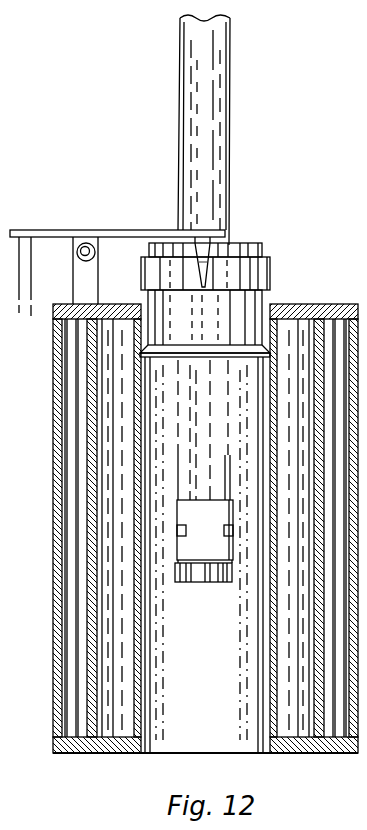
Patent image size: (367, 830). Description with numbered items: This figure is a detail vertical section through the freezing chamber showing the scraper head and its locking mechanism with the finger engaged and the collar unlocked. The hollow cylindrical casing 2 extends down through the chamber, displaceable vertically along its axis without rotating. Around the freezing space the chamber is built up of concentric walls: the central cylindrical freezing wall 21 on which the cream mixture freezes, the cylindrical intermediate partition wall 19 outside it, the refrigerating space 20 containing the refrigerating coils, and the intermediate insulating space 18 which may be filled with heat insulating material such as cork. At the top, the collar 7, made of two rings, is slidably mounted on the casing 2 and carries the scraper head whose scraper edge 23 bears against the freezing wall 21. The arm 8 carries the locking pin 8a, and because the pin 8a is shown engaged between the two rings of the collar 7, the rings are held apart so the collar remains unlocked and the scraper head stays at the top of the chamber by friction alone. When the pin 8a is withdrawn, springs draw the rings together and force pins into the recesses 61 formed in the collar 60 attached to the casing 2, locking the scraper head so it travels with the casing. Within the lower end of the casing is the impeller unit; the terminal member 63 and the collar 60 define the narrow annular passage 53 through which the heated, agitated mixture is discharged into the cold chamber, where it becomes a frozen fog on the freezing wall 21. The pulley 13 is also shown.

The hollow cylindrical casing 2 is at (218, 137).
The collar 7 is at (268, 275).
The arm 8 is at (214, 244).
The locking pin 8a is at (202, 270).
The pulley 13 is at (78, 254).
The intermediate insulating space 18 is at (331, 728).
The cylindrical intermediate partition wall 19 is at (318, 742).
The refrigerating space 20 is at (297, 728).
The central cylindrical freezing wall 21 is at (148, 752).
The scraper edge 23 is at (197, 352).
The narrow annular passage 53 is at (235, 562).
The collar 60 is at (188, 512).
The recesses 61 is at (187, 551).
The transverse terminal surface 63 is at (206, 585).